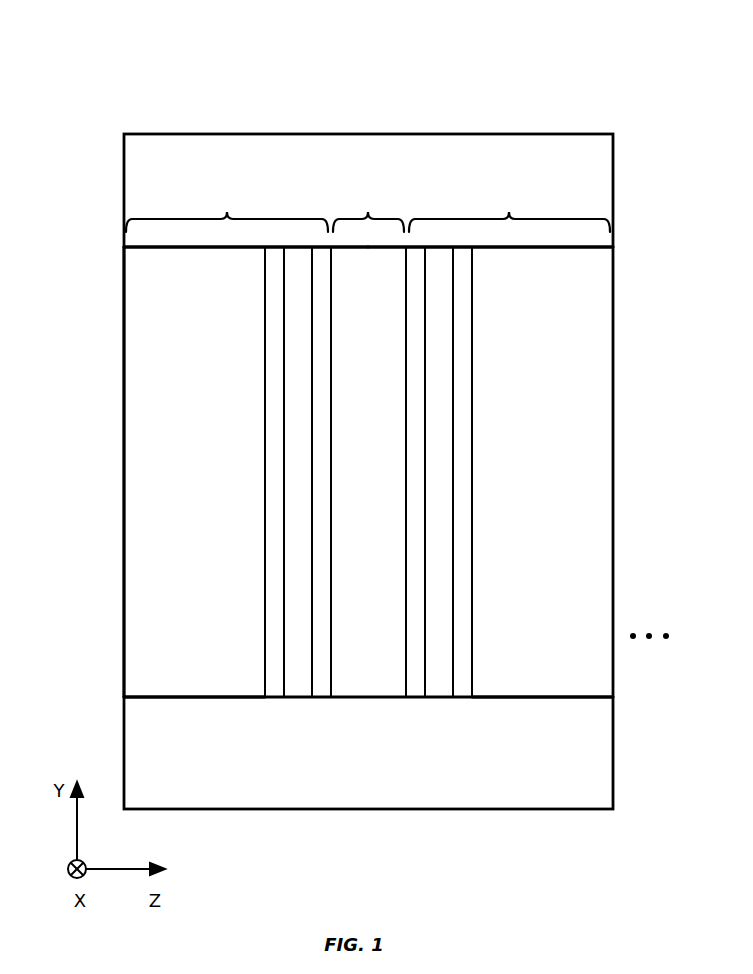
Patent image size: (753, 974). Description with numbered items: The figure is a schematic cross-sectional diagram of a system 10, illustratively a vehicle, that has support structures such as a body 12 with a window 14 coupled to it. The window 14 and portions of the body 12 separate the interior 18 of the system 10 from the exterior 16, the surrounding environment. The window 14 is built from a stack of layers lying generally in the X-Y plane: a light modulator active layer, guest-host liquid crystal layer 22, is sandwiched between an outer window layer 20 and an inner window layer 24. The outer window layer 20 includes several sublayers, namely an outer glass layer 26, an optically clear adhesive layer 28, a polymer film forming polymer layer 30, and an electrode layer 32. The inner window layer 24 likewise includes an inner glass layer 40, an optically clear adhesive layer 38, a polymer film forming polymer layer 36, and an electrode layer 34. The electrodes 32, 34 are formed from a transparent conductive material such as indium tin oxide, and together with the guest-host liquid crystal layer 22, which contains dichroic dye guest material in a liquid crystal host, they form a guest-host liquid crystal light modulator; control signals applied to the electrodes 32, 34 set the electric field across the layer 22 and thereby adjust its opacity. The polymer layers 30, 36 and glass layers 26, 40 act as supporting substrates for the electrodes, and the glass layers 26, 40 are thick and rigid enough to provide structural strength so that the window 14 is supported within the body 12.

The system 10 is at (579, 69).
The body 12 is at (603, 185).
The window 14 is at (105, 638).
The exterior 16 is at (93, 279).
The interior 18 is at (639, 273).
The outer window layer 20 is at (227, 209).
The guest-host liquid crystal layer 22 is at (368, 209).
The inner window layer 24 is at (509, 209).
The outer glass layer 26 is at (193, 688).
The optically clear adhesive layer 28 is at (275, 688).
The polymer layer 30 is at (300, 688).
The electrode layer 32 is at (322, 688).
The electrode layer 34 is at (416, 688).
The polymer layer 36 is at (440, 688).
The optically clear adhesive layer 38 is at (462, 688).
The inner glass layer 40 is at (550, 688).